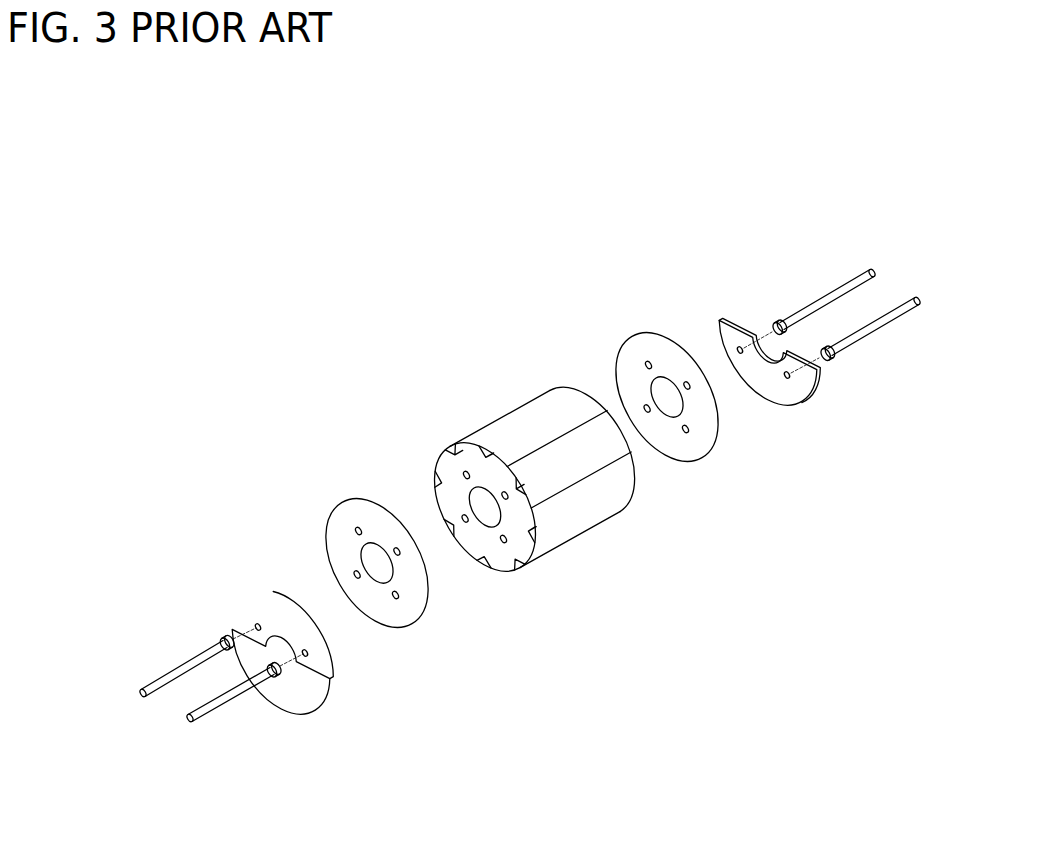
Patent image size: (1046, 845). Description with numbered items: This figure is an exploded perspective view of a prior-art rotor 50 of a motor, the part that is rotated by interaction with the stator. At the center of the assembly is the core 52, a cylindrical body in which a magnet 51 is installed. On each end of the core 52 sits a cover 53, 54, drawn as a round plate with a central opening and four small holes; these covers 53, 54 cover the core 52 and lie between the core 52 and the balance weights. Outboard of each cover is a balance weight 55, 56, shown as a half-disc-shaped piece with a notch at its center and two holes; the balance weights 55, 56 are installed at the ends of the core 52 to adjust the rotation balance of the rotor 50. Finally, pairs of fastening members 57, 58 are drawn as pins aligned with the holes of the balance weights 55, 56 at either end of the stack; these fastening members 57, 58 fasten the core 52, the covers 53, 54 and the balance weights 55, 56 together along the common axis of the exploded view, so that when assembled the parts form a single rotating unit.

The rotor 50 is at (164, 276).
The magnet 51 is at (447, 445).
The core 52 is at (482, 407).
The cover 53 is at (327, 496).
The cover 54 is at (622, 332).
The balance weight 55 is at (228, 582).
The balance weight 56 is at (708, 307).
The fastening member 57 is at (793, 270).
The fastening member 58 is at (208, 725).